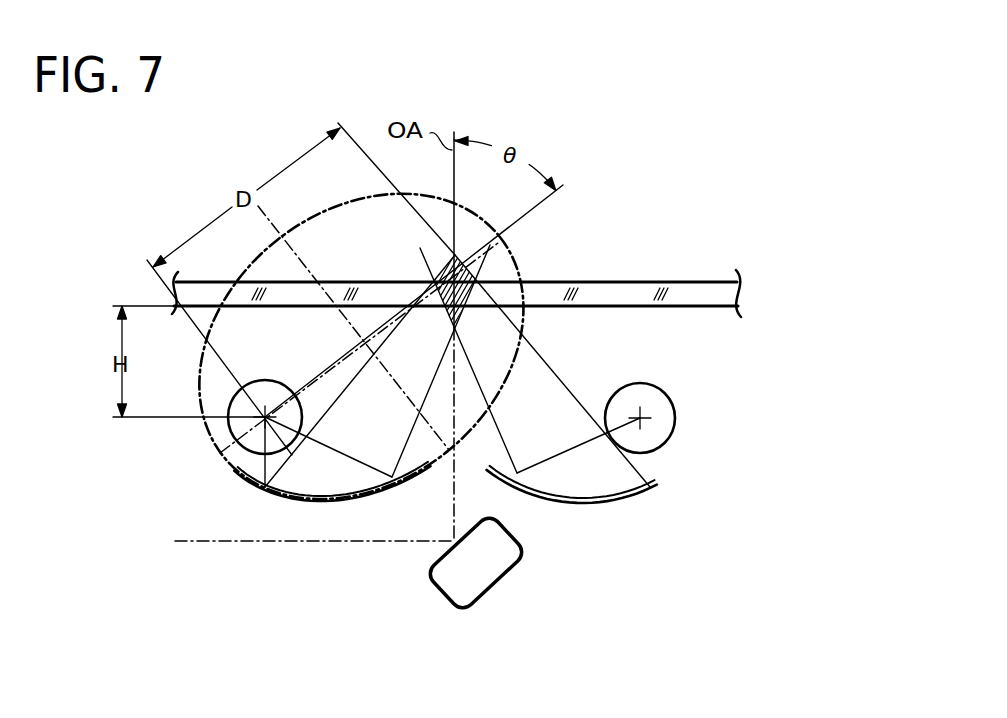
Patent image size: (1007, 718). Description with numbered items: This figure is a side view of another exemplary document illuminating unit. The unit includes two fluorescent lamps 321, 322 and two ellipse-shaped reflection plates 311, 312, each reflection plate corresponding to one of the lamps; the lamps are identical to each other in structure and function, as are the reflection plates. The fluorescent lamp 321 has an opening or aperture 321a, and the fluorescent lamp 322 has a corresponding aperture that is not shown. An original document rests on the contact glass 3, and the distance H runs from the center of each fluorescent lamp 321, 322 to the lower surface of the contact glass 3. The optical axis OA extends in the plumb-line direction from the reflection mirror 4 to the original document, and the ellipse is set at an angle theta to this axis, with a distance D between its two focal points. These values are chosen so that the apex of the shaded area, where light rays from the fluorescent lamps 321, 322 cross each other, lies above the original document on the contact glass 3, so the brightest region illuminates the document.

The contact glass 3 is at (705, 281).
The reflection mirror 4 is at (505, 583).
The reflection plate 311 is at (380, 497).
The reflection plate 312 is at (610, 504).
The fluorescent lamp 321 is at (268, 388).
The opening or aperture 321a is at (285, 443).
The fluorescent lamp 322 is at (640, 388).